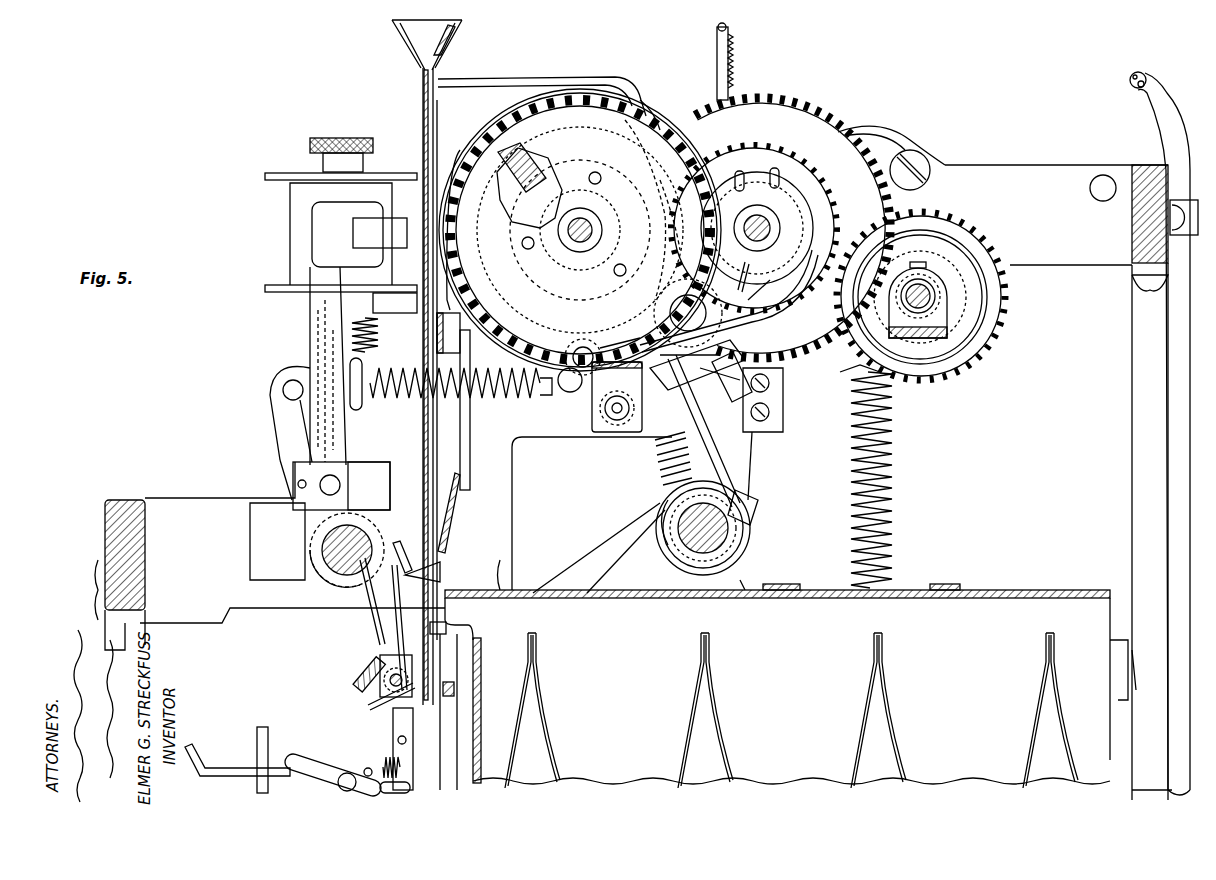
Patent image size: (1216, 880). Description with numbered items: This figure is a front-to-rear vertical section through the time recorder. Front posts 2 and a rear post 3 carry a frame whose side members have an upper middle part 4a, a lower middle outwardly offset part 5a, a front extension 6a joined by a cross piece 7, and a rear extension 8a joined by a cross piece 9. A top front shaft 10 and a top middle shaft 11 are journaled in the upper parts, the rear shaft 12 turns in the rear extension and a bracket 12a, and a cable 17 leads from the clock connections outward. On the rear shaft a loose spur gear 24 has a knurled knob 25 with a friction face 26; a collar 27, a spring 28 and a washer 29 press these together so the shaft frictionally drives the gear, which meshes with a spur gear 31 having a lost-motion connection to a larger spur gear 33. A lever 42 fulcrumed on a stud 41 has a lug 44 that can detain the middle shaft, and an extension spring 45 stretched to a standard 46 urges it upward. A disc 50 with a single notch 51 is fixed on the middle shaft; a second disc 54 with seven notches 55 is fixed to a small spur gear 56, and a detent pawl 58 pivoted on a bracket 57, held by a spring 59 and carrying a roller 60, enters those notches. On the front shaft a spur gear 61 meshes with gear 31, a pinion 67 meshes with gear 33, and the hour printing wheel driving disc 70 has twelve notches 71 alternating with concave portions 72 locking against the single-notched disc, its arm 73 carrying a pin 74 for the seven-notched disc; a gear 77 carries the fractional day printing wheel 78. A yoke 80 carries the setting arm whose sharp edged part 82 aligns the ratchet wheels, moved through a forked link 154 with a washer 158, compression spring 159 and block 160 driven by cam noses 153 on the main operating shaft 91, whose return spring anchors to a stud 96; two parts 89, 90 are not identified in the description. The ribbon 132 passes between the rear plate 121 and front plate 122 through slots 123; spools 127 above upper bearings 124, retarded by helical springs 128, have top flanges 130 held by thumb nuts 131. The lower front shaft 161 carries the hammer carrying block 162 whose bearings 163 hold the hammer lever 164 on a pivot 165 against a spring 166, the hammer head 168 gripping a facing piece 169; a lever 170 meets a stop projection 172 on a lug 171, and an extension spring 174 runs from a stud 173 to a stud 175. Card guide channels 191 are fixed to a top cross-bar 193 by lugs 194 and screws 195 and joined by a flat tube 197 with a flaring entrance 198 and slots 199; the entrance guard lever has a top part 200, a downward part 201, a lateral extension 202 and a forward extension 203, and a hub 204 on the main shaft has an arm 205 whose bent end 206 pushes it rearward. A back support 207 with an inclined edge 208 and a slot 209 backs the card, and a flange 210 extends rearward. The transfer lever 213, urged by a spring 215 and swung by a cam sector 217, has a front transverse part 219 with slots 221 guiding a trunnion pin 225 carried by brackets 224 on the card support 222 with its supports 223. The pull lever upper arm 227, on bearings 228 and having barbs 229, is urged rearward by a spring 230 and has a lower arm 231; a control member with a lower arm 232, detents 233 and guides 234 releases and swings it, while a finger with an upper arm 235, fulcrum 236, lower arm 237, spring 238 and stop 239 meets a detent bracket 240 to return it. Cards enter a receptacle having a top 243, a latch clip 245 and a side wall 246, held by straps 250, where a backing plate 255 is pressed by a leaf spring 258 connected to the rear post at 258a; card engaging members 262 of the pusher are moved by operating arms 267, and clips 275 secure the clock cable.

The front posts 2 is at (110, 624).
The rear post 3 is at (1132, 385).
The upper middle part 4a is at (779, 427).
The lower middle outwardly offset part 5a is at (761, 471).
The front extension 6a is at (220, 495).
The cross piece 7 is at (131, 495).
The rear extension 8a is at (1061, 163).
The cross piece 9 is at (1131, 234).
The top front shaft 10 is at (580, 266).
The top middle shaft 11 is at (768, 230).
The rear shaft 12 is at (940, 282).
The bracket 12a is at (941, 316).
The cable 17 is at (1150, 107).
The spur gear 24 is at (926, 204).
The knob 25 is at (1001, 309).
The friction face 26 is at (908, 236).
The collar 27 is at (920, 265).
The spring 28 is at (946, 298).
The washer 29 is at (896, 313).
The spur gear 31 is at (778, 139).
The larger spur gear 33 is at (790, 92).
The stud 41 is at (936, 156).
The lever 42 is at (880, 120).
The lug 44 is at (786, 399).
The extension spring 45 is at (736, 64).
The standard 46 is at (716, 44).
The disc 50 is at (745, 282).
The notch 51 is at (768, 289).
The second disc 54 is at (800, 197).
The notches 55 is at (778, 178).
The small spur gear 56 is at (738, 181).
The bracket 57 is at (651, 399).
The detent pawl 58 is at (810, 257).
The spring 59 is at (741, 337).
The roller 60 is at (656, 318).
The spur gear 61 is at (678, 154).
The pinion 67 is at (566, 277).
The hour printing wheel driving disc 70 is at (676, 134).
The notches 71 is at (670, 149).
The concave portions 72 is at (706, 154).
The arm 73 is at (522, 164).
The pin 74 is at (484, 140).
The gear 77 is at (512, 124).
The fractional day printing wheel 78 is at (660, 114).
The yoke 80 is at (816, 373).
The upturned sharp edged part 82 is at (590, 346).
The bearing 89 is at (598, 421).
The link 90 is at (742, 357).
The main operating shaft 91 is at (670, 569).
The stud 96 is at (1090, 194).
The ribbon guide rear plate 121 is at (468, 150).
The ribbon guide front plate 122 is at (386, 220).
The registering slots 123 is at (431, 244).
The upper bearing 124 is at (411, 317).
The ribbon spools 127 is at (279, 284).
The helical springs 128 is at (365, 339).
The removable top flanges 130 is at (281, 174).
The thumb nuts 131 is at (340, 139).
The ribbon 132 is at (290, 208).
The noses 153 is at (728, 474).
The forked link 154 is at (672, 496).
The washer 158 is at (665, 481).
The compression spring 159 is at (665, 469).
The block 160 is at (660, 446).
The lower front shaft 161 is at (331, 599).
The hammer carrying block 162 is at (291, 480).
The upstanding bearings 163 is at (345, 464).
The hammer lever 164 is at (310, 343).
The transverse pivot 165 is at (331, 473).
The spring 166 is at (349, 486).
The hammer head 168 is at (315, 234).
The facing piece 169 is at (378, 212).
The lever 170 is at (283, 435).
The upstanding lug 171 is at (378, 404).
The stop projection 172 is at (360, 357).
The stud 173 is at (284, 391).
The extension spring 174 is at (480, 401).
The stud 175 is at (549, 399).
The channels 191 is at (426, 433).
The top cross-bar 193 is at (468, 354).
The lugs 194 is at (399, 374).
The screws 195 is at (453, 333).
The wide flat tube 197 is at (441, 60).
The upwardly flaring entrance 198 is at (401, 40).
The slots 199 is at (420, 94).
The top forwardly extending part 200 is at (466, 82).
The rear downwardly extending part 201 is at (696, 427).
The lateral extension 202 is at (761, 514).
The forward extension 203 is at (751, 559).
The hub 204 is at (668, 512).
The upstanding arm 205 is at (700, 449).
The upper end part 206 is at (690, 411).
The back support 207 is at (456, 521).
The upper edge part 208 is at (461, 479).
The downwardly opening slot 209 is at (446, 584).
The flange 210 is at (481, 714).
The transfer lever 213 is at (366, 690).
The extension spring 215 is at (893, 444).
The sector 217 is at (601, 581).
The front transverse part 219 is at (368, 671).
The longitudinal slots 221 is at (372, 702).
The card support 222 is at (437, 663).
The supports 223 is at (470, 632).
The brackets 224 is at (438, 688).
The trunnion pin 225 is at (396, 719).
The upper arm 227 is at (406, 594).
The bearings 228 is at (376, 659).
The barbs 229 is at (446, 566).
The spring 230 is at (405, 613).
The lower arm 231 is at (416, 768).
The lower arm 232 is at (372, 627).
The detents 233 is at (412, 534).
The guides 234 is at (441, 555).
The upper arm 235 is at (305, 755).
The fulcrum 236 is at (340, 789).
The lower arm 237 is at (413, 788).
The spring 238 is at (385, 759).
The stop 239 is at (365, 769).
The detent bracket 240 is at (268, 729).
The casing top 243 is at (1021, 582).
The latch clip 245 is at (781, 598).
The vertical side wall 246 is at (1096, 774).
The straps 250 is at (508, 572).
The backing plate 255 is at (479, 683).
The spring 258 is at (549, 740).
The rear end connection 258a is at (1128, 638).
The card engaging members 262 is at (250, 737).
The operating arms 267 is at (581, 554).
The clips 275 is at (1140, 249).